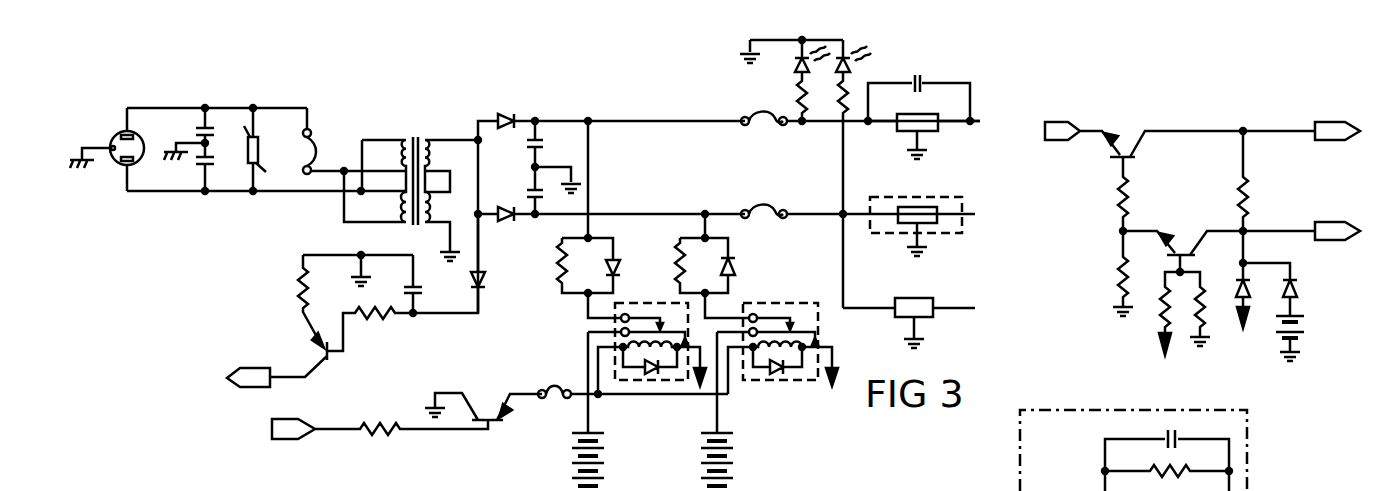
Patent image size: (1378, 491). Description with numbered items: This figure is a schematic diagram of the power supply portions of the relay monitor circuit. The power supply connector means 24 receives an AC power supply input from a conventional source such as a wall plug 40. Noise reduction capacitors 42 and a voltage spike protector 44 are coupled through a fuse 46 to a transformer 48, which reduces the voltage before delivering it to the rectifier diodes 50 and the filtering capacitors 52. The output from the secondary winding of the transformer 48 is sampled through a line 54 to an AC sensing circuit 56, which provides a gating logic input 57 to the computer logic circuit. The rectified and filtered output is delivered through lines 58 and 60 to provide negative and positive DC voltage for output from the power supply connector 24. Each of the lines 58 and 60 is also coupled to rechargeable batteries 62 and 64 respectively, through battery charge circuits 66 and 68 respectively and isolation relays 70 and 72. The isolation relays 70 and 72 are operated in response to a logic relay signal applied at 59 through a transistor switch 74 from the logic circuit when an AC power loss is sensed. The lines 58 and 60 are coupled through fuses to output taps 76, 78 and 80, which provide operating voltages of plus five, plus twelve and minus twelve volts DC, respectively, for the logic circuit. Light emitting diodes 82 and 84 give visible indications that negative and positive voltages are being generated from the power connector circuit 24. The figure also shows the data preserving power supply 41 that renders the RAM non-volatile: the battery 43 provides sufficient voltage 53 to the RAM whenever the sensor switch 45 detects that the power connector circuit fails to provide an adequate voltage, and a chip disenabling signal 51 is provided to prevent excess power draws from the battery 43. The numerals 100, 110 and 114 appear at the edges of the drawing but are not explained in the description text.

The power supply connector means 24 is at (273, 80).
The wall plug 40 is at (110, 138).
The noise reduction capacitors 42 is at (193, 170).
The voltage spike protector 44 is at (250, 133).
The fuse 46 is at (325, 138).
The transformer 48 is at (415, 137).
The rectifier diodes 50 is at (520, 118).
The filtering capacitors 52 is at (548, 136).
The line 54 is at (482, 260).
The AC sensing circuit 56 is at (300, 291).
The gating logic input 57 is at (240, 370).
The line 58 is at (665, 118).
The logic relay signal input 59 is at (270, 432).
The line 60 is at (673, 212).
The rechargeable battery 62 is at (568, 442).
The rechargeable battery 64 is at (735, 445).
The battery charge circuit 66 is at (564, 306).
The battery charge circuit 68 is at (750, 272).
The isolation relay 70 is at (580, 364).
The isolation relay 72 is at (790, 383).
The transistor switch 74 is at (483, 440).
The output tap 76 is at (977, 122).
The output tap 78 is at (977, 215).
The output tap 80 is at (977, 309).
The light emitting diode 82 is at (795, 72).
The light emitting diode 84 is at (855, 64).
The data preserving power supply 41 is at (1190, 113).
The chip disenabling signal 51 is at (1345, 122).
The voltage 53 is at (1345, 222).
The battery 43 is at (1302, 320).
The sensor switch 45 is at (1198, 352).
The circuit section 100 is at (836, 490).
The circuit section 110 is at (248, 490).
The circuit block 114 is at (1346, 490).